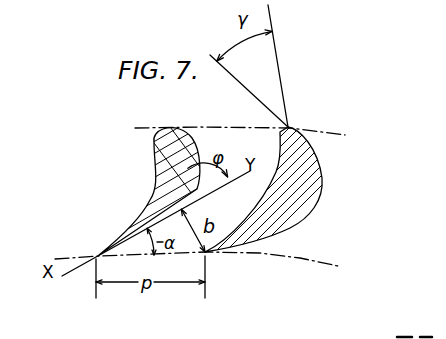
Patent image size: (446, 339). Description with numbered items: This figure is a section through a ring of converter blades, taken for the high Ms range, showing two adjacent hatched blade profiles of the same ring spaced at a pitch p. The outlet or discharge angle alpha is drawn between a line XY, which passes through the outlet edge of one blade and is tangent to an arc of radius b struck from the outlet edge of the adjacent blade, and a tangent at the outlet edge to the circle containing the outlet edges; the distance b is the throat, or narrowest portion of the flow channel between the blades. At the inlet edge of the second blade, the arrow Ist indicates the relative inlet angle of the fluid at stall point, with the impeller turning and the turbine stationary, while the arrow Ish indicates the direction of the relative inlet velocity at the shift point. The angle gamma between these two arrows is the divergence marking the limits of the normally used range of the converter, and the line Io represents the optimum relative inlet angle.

The optimum relative inlet angle Io is at (218, 209).
The relative inlet angle at stall point Ist is at (238, 81).
The relative inlet velocity direction at shift point Ish is at (283, 95).